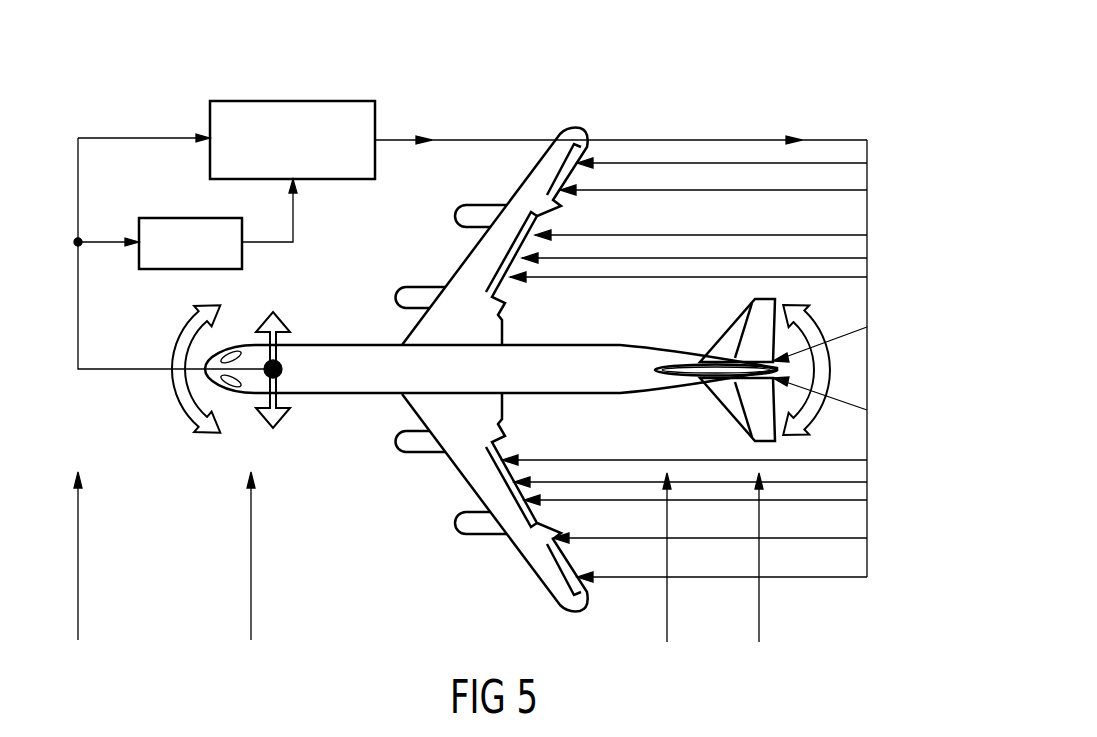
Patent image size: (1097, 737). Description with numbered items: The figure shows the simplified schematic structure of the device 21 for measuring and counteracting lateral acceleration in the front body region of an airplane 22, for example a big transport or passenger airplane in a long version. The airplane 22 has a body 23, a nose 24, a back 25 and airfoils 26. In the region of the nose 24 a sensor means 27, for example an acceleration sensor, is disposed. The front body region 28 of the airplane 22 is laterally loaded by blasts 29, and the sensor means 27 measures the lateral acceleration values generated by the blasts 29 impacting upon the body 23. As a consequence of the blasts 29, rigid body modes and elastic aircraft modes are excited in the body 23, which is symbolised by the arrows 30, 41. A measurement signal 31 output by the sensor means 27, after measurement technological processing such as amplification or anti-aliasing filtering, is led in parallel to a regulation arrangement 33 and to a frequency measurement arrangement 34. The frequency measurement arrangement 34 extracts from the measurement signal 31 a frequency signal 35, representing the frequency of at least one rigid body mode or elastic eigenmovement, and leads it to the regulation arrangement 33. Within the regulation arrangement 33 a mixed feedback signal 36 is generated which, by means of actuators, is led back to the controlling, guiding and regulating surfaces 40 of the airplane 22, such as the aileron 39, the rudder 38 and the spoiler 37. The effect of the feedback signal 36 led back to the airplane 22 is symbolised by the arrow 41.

The device 21 is at (491, 201).
The airplane 22 is at (580, 346).
The body 23 is at (318, 396).
The nose 24 is at (122, 399).
The back 25 is at (890, 363).
The airfoils 26 is at (570, 131).
The sensor means 27 is at (283, 362).
The front body region 28 is at (353, 446).
The blasts 29 is at (78, 590).
The arrow 30 is at (185, 405).
The measurement signal 31 is at (78, 303).
The regulation arrangement 33 is at (296, 101).
The frequency measurement arrangement 34 is at (178, 218).
The frequency signal 35 is at (293, 214).
The feedback signal 36 is at (470, 140).
The spoiler 37 is at (540, 258).
The rudder 38 is at (690, 374).
The aileron 39 is at (585, 163).
The controlling, guiding and regulating surfaces 40 is at (814, 122).
The arrow 41 is at (820, 408).